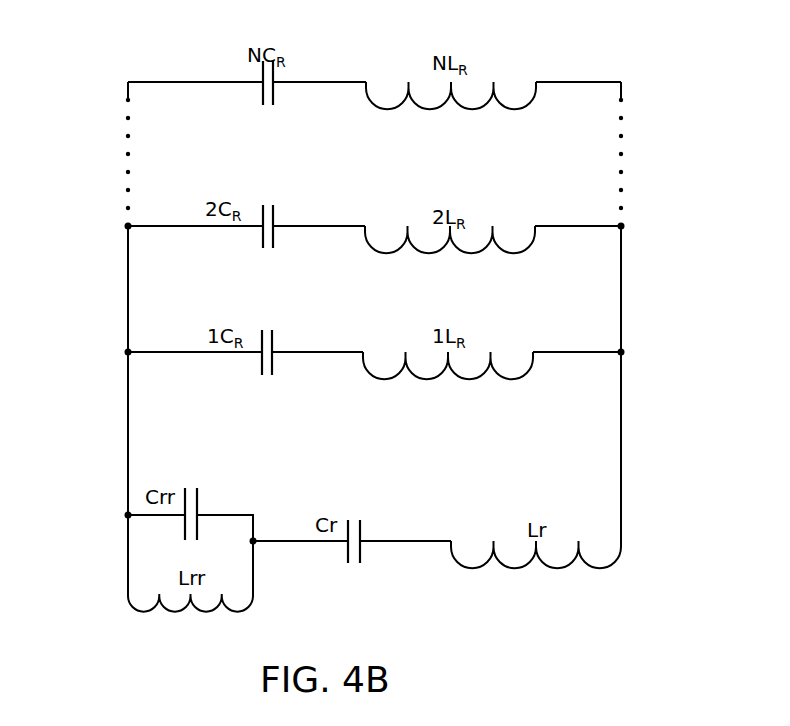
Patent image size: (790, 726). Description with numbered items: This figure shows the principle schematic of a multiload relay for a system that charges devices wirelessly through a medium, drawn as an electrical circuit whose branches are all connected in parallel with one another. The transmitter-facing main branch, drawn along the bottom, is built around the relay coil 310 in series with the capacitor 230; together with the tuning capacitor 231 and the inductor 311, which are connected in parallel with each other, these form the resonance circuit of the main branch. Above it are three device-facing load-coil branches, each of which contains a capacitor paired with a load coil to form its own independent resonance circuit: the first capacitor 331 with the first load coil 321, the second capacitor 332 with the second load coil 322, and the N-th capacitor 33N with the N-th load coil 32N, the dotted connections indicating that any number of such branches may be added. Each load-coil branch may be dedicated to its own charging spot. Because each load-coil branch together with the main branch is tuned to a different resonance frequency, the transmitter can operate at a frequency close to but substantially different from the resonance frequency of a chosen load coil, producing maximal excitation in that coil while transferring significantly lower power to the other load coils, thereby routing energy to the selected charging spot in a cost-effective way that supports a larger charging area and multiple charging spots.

The capacitor NCr 33N is at (253, 82).
The load coil NLr 32N is at (536, 103).
The capacitor 2Cr 332 is at (288, 225).
The load coil 2Lr 322 is at (508, 248).
The capacitor 1Cr 331 is at (236, 353).
The load coil 1Lr 321 is at (510, 380).
The tuning capacitor Crr 231 is at (213, 515).
The inductor Lrr 311 is at (128, 603).
The capacitor Cr 230 is at (340, 541).
The relay coil Lr 310 is at (470, 568).